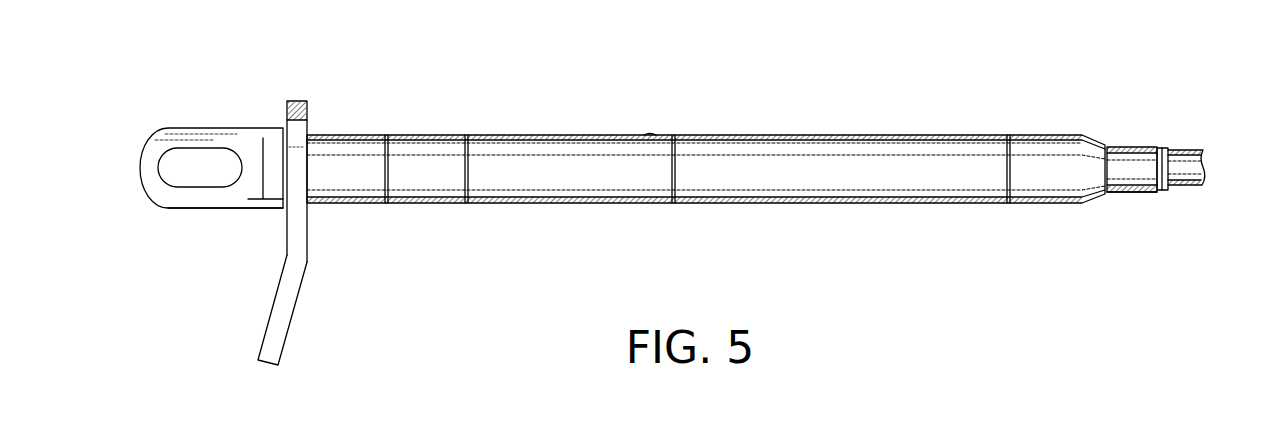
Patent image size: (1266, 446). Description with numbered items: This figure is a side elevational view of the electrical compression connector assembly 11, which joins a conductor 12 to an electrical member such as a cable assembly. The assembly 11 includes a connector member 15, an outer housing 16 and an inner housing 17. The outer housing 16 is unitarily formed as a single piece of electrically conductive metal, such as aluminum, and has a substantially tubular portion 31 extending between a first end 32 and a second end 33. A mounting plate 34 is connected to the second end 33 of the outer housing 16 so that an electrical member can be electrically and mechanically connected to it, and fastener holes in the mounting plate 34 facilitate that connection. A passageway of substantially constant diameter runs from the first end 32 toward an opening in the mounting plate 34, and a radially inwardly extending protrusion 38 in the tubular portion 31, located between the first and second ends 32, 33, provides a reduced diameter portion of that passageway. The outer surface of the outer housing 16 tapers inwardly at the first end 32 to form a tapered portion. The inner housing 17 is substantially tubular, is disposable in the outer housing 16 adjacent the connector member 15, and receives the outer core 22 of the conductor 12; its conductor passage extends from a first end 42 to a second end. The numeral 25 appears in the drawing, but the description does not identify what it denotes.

The electrical compression connector assembly 11 is at (702, 79).
The conductor 12 is at (1196, 141).
The connector member 15 is at (218, 218).
The outer housing 16 is at (756, 211).
The inner housing 17 is at (1129, 201).
The outer core 22 is at (1181, 200).
The handle with slot 25 is at (202, 128).
The tubular portion 31 is at (525, 135).
The first end 32 is at (1107, 146).
The second end 33 is at (318, 137).
The mounting plate 34 is at (291, 320).
The radially inwardly extending protrusion 38 is at (634, 136).
The first end 42 is at (1162, 148).